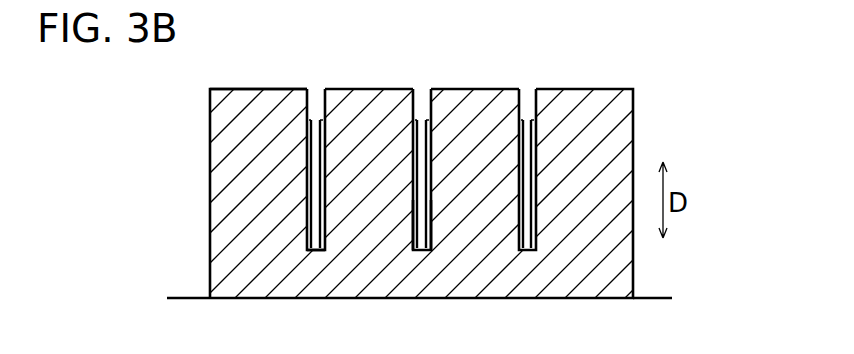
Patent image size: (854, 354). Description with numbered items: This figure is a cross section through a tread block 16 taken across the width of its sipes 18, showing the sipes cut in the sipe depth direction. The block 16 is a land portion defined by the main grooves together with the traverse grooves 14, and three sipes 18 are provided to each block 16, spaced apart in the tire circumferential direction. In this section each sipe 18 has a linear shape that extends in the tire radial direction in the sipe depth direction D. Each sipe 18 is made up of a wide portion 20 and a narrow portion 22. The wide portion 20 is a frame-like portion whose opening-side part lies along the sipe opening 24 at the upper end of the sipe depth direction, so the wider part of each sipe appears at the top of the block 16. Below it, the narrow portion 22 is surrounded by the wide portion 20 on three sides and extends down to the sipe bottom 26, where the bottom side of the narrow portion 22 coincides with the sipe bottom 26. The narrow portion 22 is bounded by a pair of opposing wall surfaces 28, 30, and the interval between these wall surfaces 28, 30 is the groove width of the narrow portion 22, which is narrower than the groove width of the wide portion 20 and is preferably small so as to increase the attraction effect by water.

The traverse groove 14 is at (188, 297).
The block 16 is at (573, 97).
The sipe 18 is at (315, 100).
The wide portion 20 is at (530, 112).
The narrow portion 22 is at (540, 170).
The sipe opening 24 is at (312, 89).
The sipe bottom 26 is at (317, 258).
The wall surface 28 is at (422, 207).
The wall surface 30 is at (422, 207).